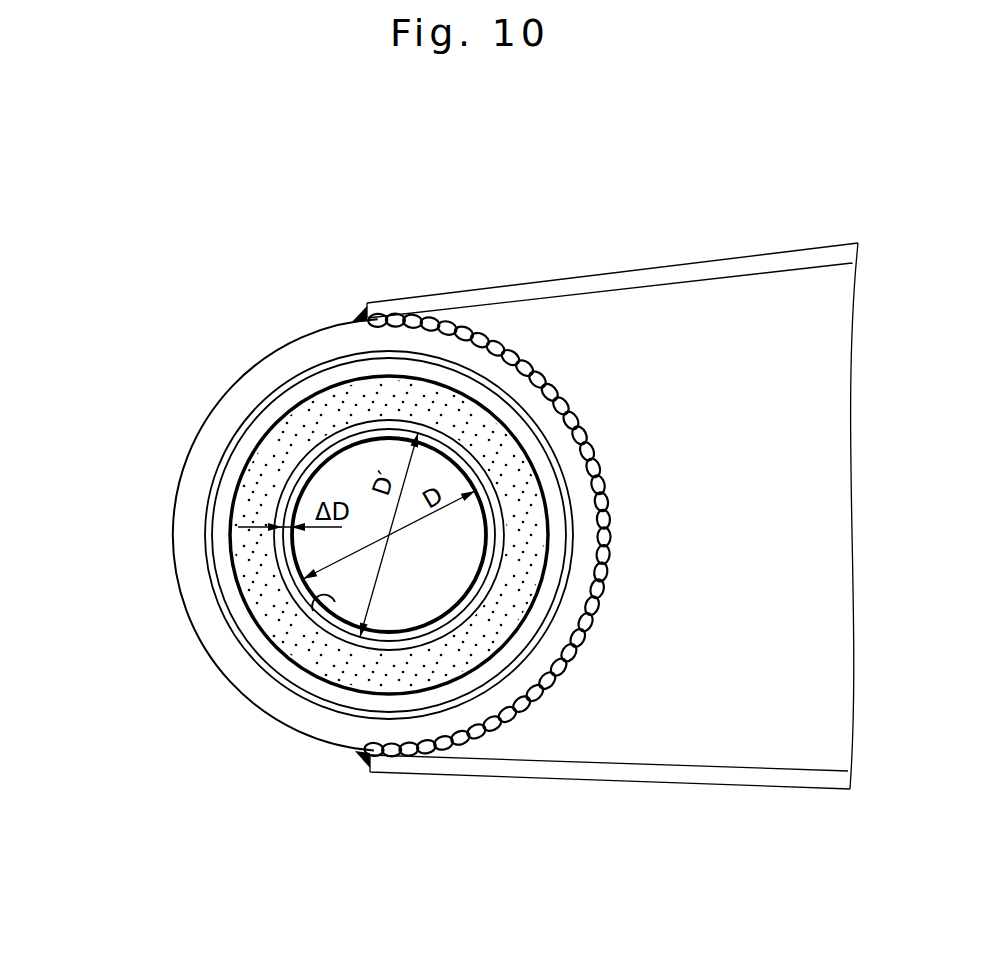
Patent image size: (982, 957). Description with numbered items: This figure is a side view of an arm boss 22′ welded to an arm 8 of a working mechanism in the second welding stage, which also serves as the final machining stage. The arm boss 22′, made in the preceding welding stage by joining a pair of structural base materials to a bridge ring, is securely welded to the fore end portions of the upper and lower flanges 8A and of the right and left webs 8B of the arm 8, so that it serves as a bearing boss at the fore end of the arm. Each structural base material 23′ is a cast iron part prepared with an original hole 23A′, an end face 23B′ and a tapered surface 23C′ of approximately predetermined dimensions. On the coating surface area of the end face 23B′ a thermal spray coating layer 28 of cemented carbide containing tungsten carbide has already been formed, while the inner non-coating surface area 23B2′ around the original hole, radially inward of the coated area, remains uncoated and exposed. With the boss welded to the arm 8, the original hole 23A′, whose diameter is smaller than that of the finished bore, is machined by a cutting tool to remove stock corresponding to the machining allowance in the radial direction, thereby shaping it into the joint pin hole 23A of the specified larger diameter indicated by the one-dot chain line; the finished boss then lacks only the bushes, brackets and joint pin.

The arm 8 is at (728, 258).
The upper and lower flanges 8A is at (567, 290).
The right and left webs 8B is at (740, 705).
The arm boss 22′ is at (238, 372).
The structural base material 23′ is at (286, 350).
The joint pin hole 23A is at (363, 428).
The original hole 23A′ is at (328, 617).
The end face 23B′ is at (257, 470).
The thermal spray coating layer 28 is at (298, 535).
The inner non-coating surface area 23B2′ is at (288, 576).
The tapered surface 23C′ is at (347, 703).